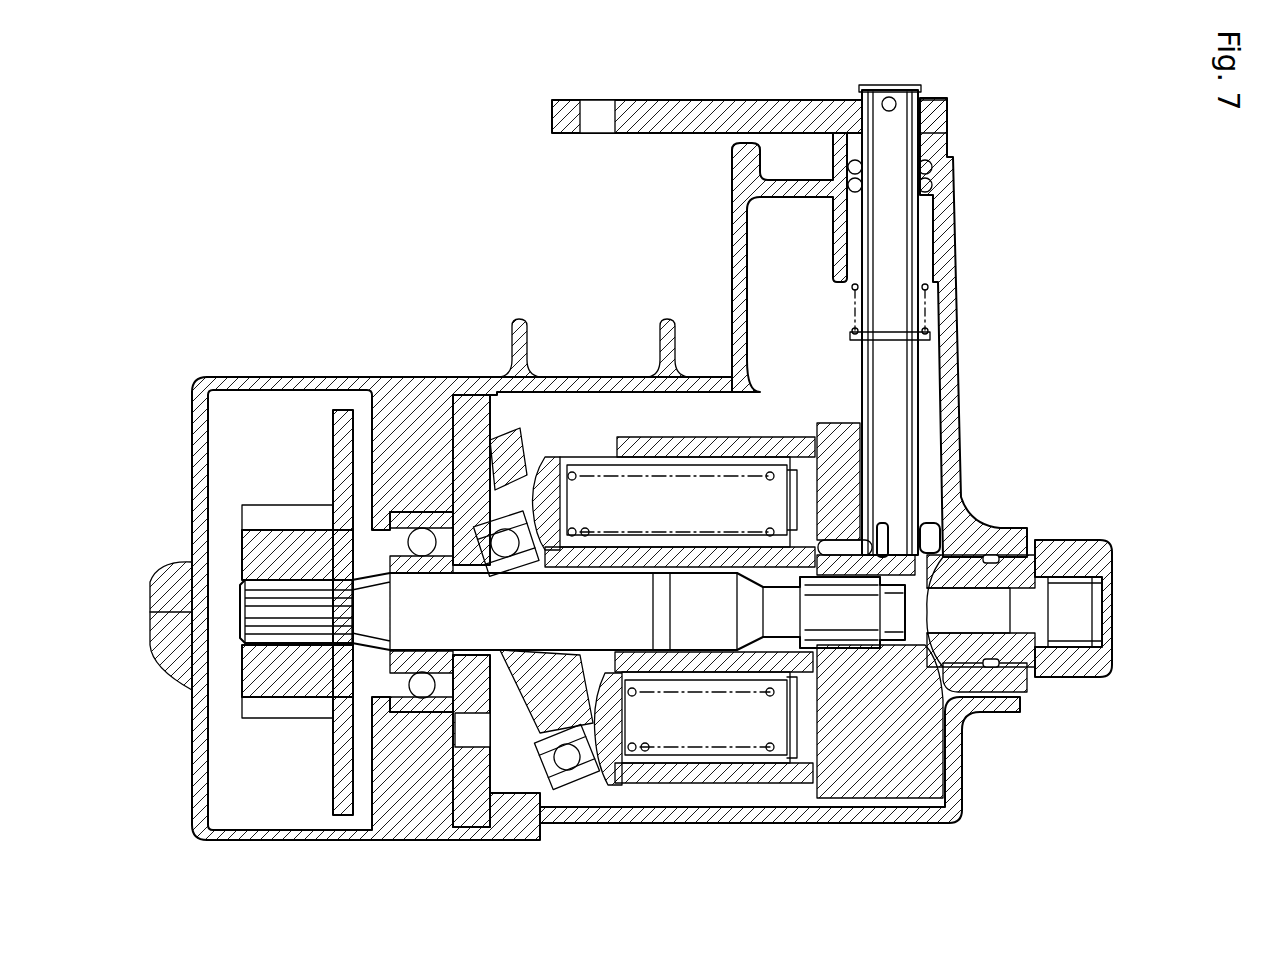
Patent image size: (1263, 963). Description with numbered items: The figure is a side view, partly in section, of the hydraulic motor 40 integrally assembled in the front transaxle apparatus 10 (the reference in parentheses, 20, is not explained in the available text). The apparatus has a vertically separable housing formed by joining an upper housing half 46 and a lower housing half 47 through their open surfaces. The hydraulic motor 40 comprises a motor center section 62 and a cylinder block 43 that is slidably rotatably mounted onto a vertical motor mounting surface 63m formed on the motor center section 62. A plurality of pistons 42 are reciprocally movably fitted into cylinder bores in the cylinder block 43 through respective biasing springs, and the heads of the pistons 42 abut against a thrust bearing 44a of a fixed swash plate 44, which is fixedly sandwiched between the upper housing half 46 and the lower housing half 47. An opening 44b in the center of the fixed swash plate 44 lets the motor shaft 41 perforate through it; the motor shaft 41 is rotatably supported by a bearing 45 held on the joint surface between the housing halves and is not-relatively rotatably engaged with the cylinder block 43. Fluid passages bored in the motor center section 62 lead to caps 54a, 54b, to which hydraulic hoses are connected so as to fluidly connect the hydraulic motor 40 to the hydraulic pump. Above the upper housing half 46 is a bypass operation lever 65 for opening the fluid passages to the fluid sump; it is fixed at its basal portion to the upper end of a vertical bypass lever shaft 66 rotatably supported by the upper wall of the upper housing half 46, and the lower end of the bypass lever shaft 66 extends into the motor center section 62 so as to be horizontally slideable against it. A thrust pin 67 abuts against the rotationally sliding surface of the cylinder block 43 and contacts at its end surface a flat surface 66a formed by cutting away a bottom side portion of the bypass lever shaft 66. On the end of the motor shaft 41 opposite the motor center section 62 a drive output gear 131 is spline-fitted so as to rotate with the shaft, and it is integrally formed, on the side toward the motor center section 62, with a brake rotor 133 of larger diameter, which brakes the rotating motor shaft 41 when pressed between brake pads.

The front transaxle apparatus 10 is at (624, 474).
The hydraulic motor 20 is at (624, 474).
The hydraulic motor 40 is at (722, 430).
The motor shaft 41 is at (243, 615).
The pistons 42 is at (563, 465).
The cylinder block 43 is at (712, 785).
The fixed swash plate 44 is at (517, 433).
The thrust bearing 44a is at (578, 582).
The opening 44b is at (497, 580).
The bearing 45 is at (422, 563).
The upper housing half 46 is at (176, 574).
The lower housing half 47 is at (178, 660).
The cap 54a is at (1020, 638).
The cap 54b is at (1050, 677).
The motor center section 62 is at (865, 800).
The motor mounting surface 63m is at (815, 432).
The bypass operation lever 65 is at (634, 135).
The bypass lever shaft 66 is at (860, 370).
The flat surface 66a is at (882, 532).
The thrust pin 67 is at (832, 553).
The drive output gear 131 is at (282, 710).
The brake rotor 133 is at (340, 780).